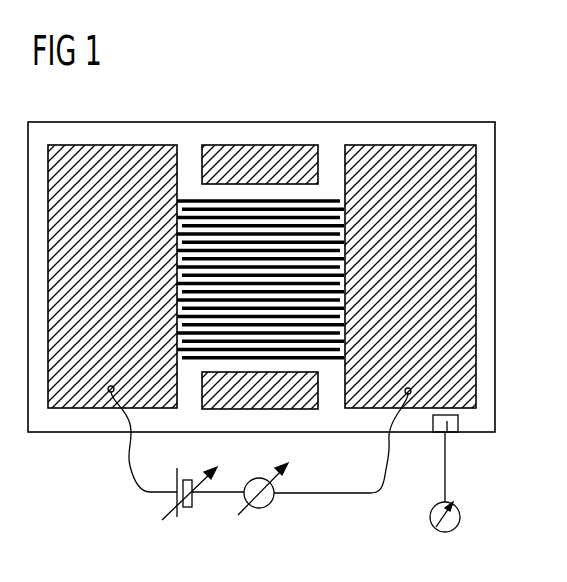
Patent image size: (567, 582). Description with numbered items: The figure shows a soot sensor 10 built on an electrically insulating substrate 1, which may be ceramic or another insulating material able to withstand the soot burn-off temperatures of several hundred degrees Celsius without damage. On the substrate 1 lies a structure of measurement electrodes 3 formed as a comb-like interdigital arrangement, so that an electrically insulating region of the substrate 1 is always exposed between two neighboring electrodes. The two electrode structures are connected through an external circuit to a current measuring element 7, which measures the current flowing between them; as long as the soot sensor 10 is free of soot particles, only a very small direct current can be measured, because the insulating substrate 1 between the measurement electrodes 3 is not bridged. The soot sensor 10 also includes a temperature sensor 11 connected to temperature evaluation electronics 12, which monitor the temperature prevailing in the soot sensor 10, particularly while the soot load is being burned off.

The substrate 1 is at (485, 280).
The soot sensor 10 is at (268, 114).
The measurement electrodes 3 is at (326, 196).
The current measuring element 7 is at (259, 508).
The temperature sensor 11 is at (449, 424).
The temperature evaluation electronics 12 is at (460, 515).